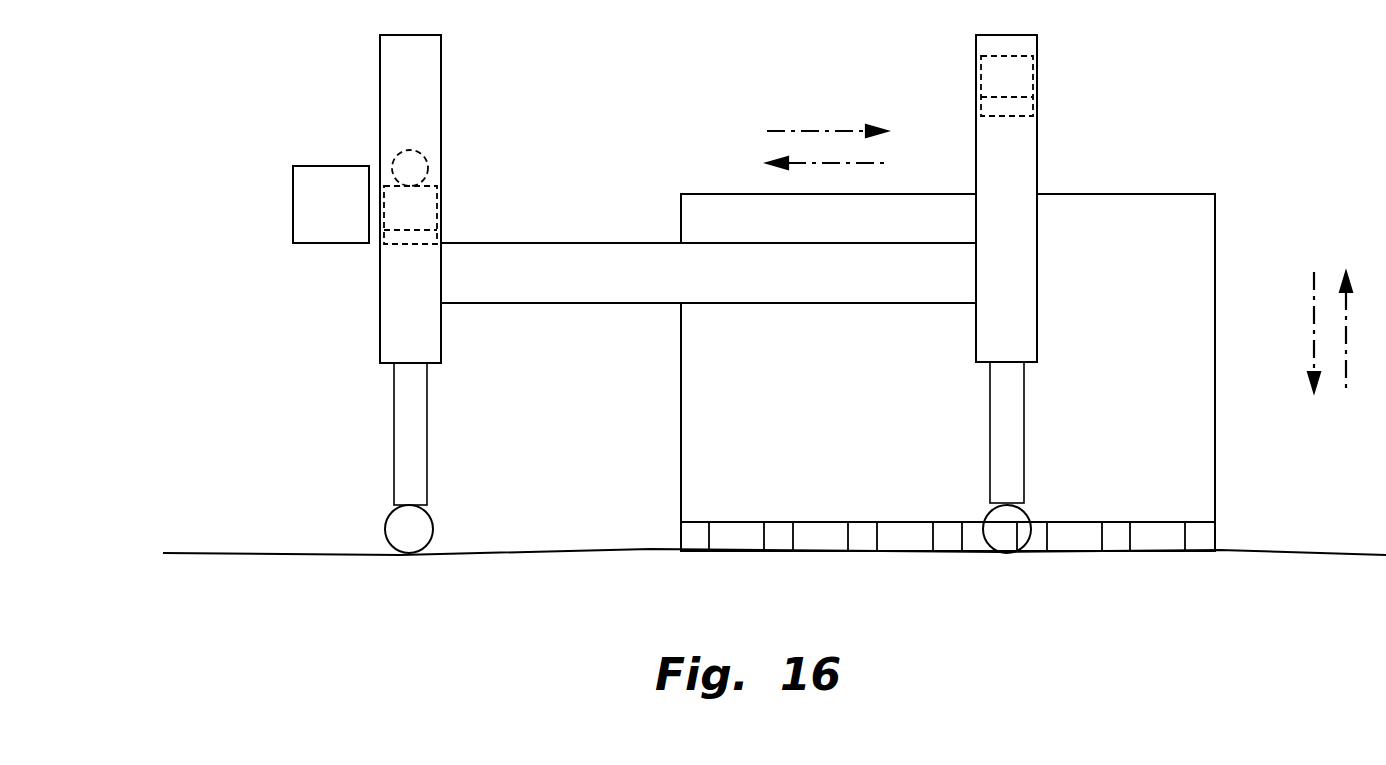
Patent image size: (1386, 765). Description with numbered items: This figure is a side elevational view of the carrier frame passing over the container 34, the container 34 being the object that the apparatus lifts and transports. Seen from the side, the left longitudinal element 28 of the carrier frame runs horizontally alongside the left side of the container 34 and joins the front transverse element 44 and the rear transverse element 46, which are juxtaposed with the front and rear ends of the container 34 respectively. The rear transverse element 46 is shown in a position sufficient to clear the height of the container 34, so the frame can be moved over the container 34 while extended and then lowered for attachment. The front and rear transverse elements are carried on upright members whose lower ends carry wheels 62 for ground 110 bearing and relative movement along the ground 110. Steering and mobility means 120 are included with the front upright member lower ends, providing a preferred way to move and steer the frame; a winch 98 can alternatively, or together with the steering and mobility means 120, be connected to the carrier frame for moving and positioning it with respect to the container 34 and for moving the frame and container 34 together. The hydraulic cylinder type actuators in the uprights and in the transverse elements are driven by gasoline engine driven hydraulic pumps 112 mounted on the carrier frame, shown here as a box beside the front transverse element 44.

The left longitudinal element 28 is at (555, 270).
The container 34 is at (1103, 193).
The front transverse element 44 is at (410, 215).
The rear transverse element 46 is at (1007, 86).
The wheels 62 is at (1030, 535).
The winch 98 is at (423, 152).
The ground 110 is at (1263, 550).
The hydraulic pumps 112 is at (314, 214).
The steering and mobility means 120 is at (436, 530).